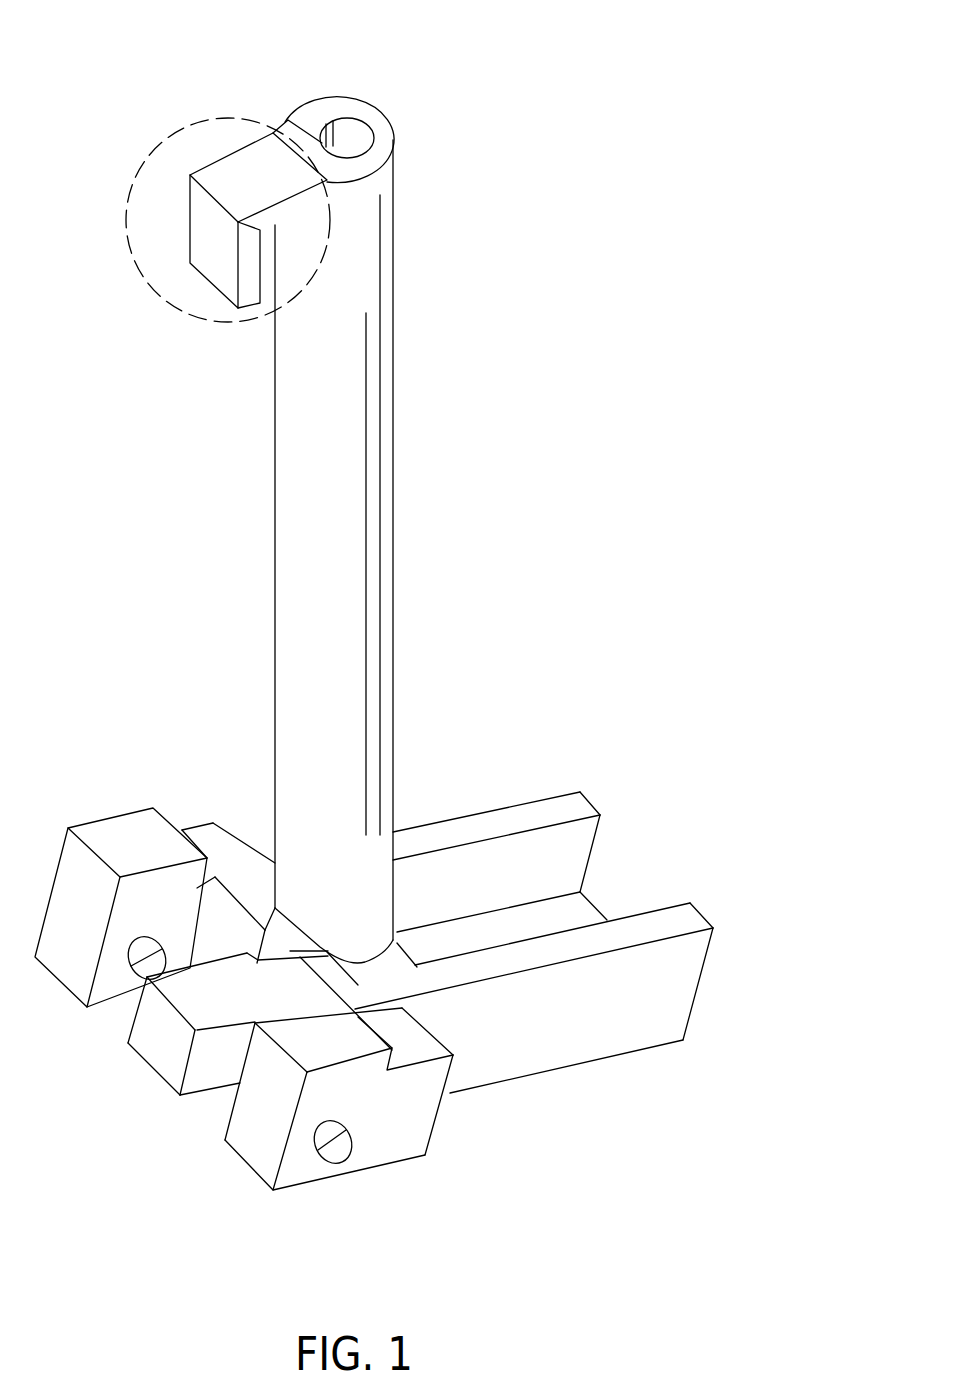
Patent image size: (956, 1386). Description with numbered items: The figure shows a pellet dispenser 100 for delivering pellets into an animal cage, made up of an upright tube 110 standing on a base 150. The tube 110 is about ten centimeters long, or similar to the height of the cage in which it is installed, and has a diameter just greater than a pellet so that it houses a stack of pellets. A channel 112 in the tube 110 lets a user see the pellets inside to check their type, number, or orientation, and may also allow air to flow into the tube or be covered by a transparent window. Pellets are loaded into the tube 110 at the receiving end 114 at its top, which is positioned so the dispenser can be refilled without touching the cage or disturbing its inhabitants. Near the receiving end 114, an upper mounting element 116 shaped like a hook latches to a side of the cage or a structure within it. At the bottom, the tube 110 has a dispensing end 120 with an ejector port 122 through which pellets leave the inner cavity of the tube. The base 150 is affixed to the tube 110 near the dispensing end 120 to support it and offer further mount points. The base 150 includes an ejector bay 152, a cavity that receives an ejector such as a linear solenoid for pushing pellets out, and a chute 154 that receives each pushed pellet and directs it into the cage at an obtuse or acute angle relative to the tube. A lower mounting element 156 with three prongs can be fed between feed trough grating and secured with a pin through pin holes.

The pellet dispenser 100 is at (645, 112).
The tube 110 is at (400, 431).
The channel 112 is at (283, 125).
The receiving end 114 is at (383, 95).
The upper mounting element 116 is at (167, 136).
The dispensing end 120 is at (397, 906).
The ejector port 122 is at (291, 966).
The base 150 is at (558, 778).
The ejector bay 152 is at (578, 879).
The chute 154 is at (186, 1002).
The lower mounting element 156 is at (244, 1131).